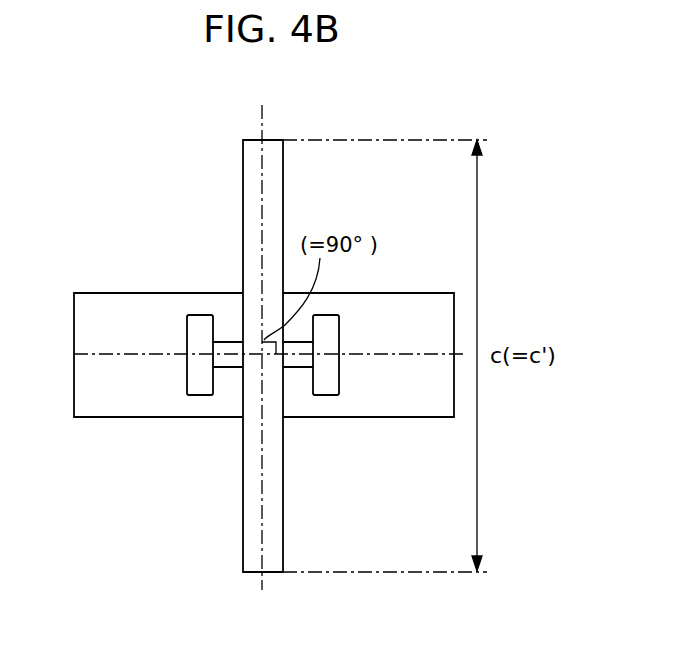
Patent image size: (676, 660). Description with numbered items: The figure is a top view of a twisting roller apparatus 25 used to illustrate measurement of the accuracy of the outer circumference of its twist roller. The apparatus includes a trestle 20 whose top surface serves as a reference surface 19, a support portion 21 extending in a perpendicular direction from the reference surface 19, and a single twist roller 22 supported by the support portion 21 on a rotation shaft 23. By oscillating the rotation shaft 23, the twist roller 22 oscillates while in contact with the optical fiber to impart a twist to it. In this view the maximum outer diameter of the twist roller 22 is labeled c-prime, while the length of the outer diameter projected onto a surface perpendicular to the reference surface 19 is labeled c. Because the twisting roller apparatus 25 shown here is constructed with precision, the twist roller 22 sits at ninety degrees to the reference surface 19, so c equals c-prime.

The reference surface 19 is at (102, 312).
The trestle 20 is at (133, 405).
The support portion 21 is at (200, 323).
The twist roller 22 is at (258, 548).
The rotation shaft 23 is at (230, 347).
The twisting roller apparatus 25 is at (380, 197).